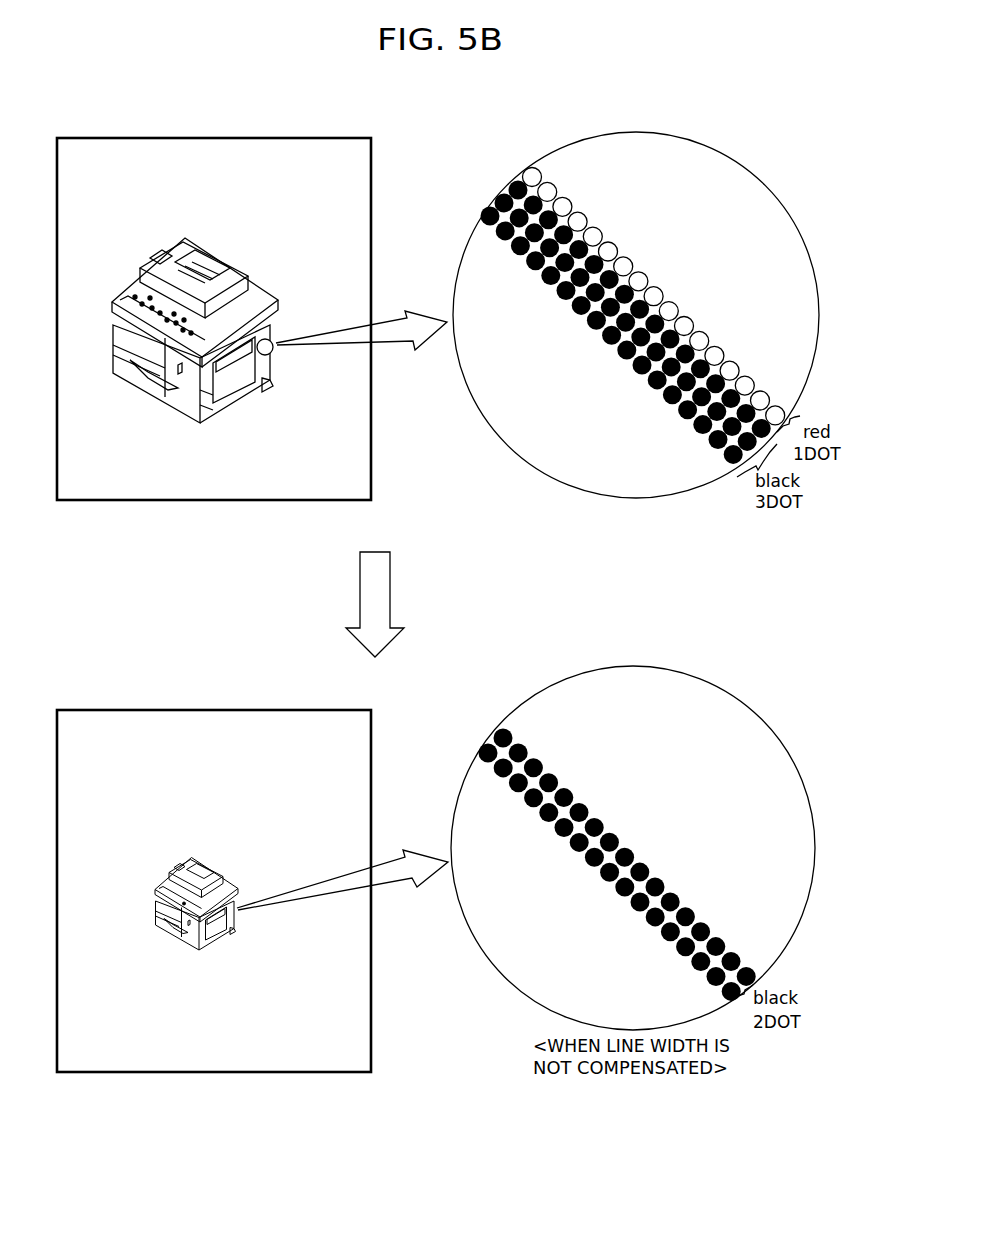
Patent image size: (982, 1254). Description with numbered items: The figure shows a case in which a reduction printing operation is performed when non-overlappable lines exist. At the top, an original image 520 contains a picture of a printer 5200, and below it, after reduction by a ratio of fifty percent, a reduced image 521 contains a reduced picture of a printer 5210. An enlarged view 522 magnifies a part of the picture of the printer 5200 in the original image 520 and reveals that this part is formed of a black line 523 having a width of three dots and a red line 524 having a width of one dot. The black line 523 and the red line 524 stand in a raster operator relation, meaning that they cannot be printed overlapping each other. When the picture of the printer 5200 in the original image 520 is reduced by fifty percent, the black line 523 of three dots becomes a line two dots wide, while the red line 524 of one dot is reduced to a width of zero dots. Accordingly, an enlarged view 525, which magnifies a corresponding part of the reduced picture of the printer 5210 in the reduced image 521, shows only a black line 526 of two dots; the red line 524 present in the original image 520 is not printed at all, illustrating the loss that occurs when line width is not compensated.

The original image 520 is at (263, 137).
The picture of a printer 5200 is at (267, 390).
The enlarged view 522 is at (733, 153).
The black line 523 is at (510, 170).
The red line 524 is at (530, 149).
The reduced image 521 is at (263, 709).
The reduced picture of a printer 5210 is at (233, 930).
The enlarged view 525 is at (727, 693).
The black line 526 is at (498, 721).